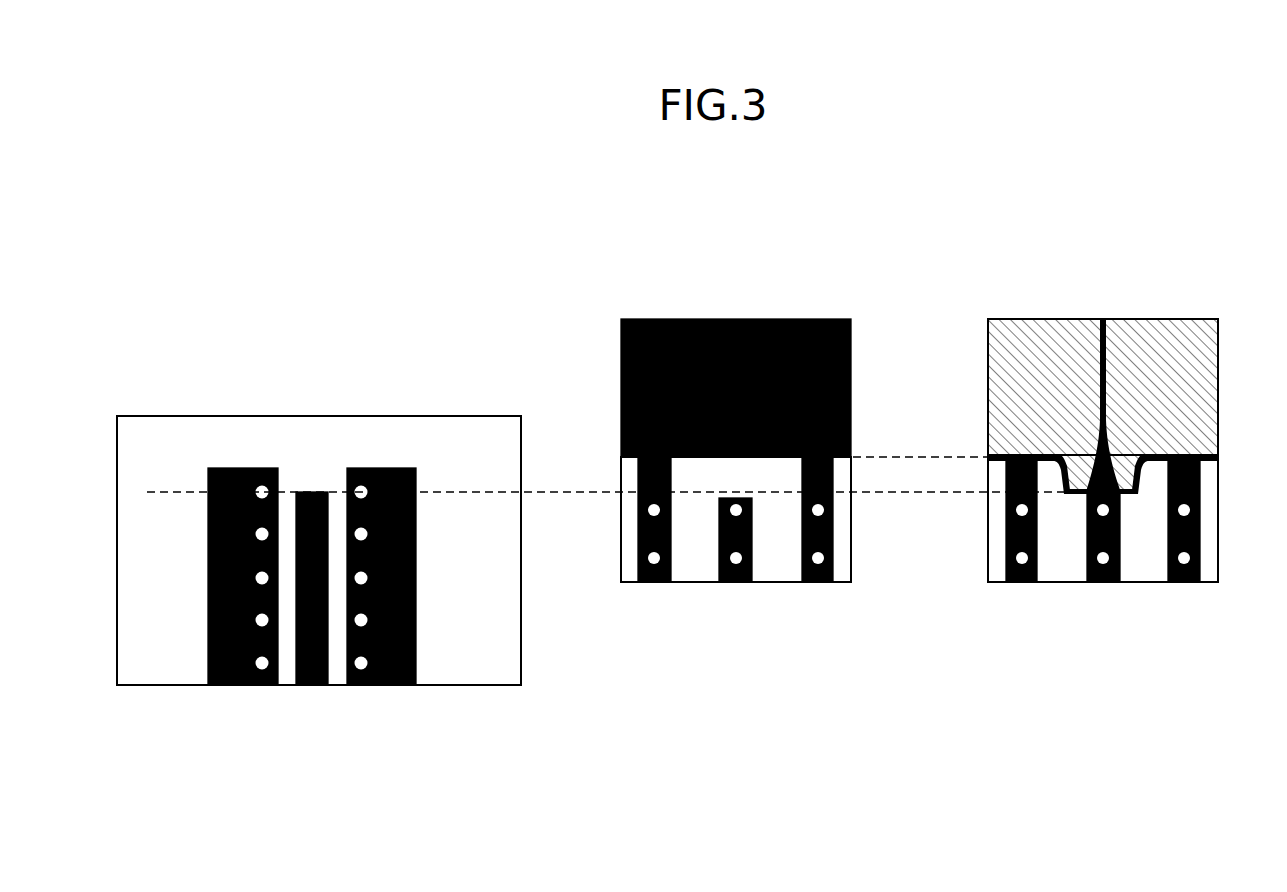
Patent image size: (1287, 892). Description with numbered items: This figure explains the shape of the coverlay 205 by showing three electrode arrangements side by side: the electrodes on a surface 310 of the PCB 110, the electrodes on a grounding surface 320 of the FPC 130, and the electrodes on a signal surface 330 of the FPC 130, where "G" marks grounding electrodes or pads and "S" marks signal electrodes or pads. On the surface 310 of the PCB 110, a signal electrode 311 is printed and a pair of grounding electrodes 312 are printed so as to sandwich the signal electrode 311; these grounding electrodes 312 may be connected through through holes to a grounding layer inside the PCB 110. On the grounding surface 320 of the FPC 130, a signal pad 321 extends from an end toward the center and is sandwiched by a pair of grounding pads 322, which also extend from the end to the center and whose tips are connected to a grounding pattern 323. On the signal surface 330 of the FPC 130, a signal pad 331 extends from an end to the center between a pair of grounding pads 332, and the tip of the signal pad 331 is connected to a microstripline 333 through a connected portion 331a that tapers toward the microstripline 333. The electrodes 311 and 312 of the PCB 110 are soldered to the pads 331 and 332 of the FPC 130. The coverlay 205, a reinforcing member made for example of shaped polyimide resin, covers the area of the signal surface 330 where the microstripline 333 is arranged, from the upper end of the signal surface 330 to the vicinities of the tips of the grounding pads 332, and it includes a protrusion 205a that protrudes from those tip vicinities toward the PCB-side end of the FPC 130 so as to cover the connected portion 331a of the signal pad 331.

The surface of the PCB 310 is at (194, 232).
The signal electrode 311 is at (311, 492).
The grounding electrodes 312 is at (242, 468).
The PCB 110 is at (522, 656).
The grounding surface of the FPC 320 is at (672, 232).
The signal pad 321 is at (746, 582).
The grounding pads 322 is at (665, 582).
The grounding pattern 323 is at (853, 320).
The FPC 130 is at (852, 549).
The signal surface of the FPC 330 is at (1049, 232).
The signal pad 331 is at (1113, 582).
The grounding pads 332 is at (1033, 582).
The microstripline 333 is at (1103, 319).
The coverlay 205 is at (1203, 388).
The protrusion 205a is at (1130, 443).
The connected portion 331a is at (1112, 460).